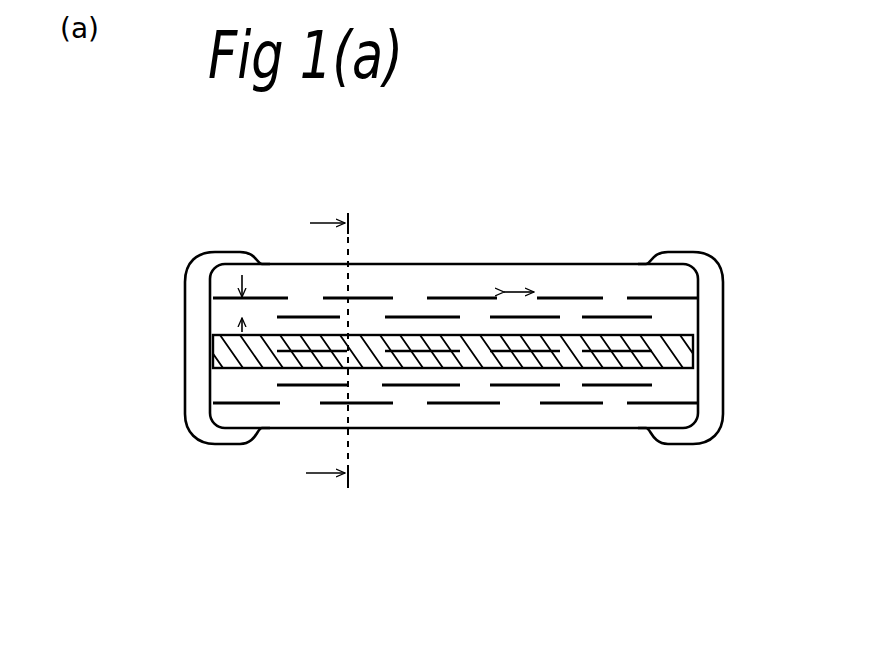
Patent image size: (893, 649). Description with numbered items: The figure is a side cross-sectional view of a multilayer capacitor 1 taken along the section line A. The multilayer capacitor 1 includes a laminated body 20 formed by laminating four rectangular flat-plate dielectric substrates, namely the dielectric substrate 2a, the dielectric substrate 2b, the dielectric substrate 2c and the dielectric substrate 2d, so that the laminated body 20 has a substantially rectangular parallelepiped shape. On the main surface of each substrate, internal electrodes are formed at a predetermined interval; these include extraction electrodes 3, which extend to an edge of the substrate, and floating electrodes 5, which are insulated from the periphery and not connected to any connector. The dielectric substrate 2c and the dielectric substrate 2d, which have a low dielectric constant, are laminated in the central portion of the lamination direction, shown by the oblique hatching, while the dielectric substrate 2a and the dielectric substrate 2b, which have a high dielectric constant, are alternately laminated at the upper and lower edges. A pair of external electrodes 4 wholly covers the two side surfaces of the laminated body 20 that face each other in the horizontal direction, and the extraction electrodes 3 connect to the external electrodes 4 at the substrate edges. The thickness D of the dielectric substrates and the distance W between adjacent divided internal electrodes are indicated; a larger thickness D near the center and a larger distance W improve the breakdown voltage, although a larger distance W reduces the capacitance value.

The multilayer capacitor 1 is at (518, 121).
The laminated body 20 is at (624, 264).
The dielectric substrate 2a is at (400, 310).
The dielectric substrate 2b is at (475, 333).
The dielectric substrate 2c is at (413, 351).
The dielectric substrate 2d is at (460, 366).
The extraction electrode 3 is at (670, 409).
The external electrode 4 is at (196, 283).
The floating electrode 5 is at (615, 387).
The thickness D is at (240, 309).
The distance W is at (524, 288).
The section line A- A is at (316, 348).